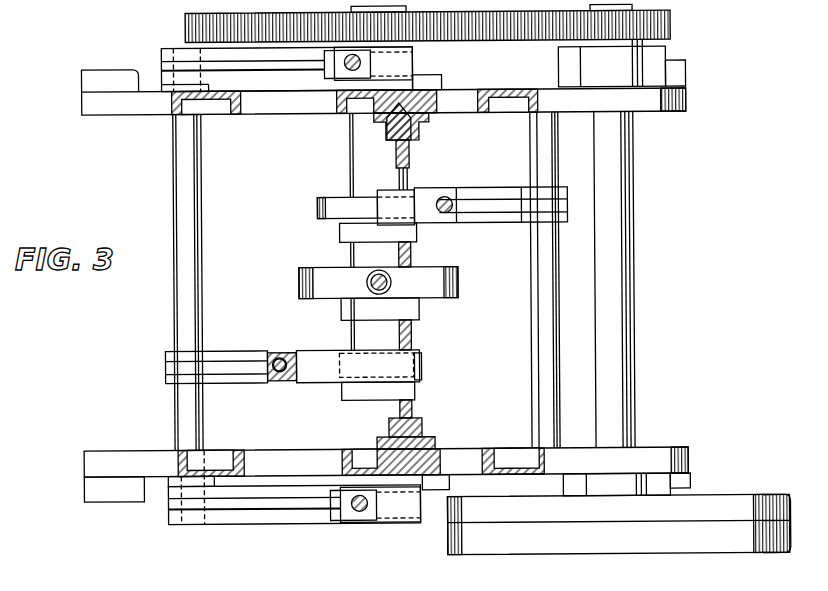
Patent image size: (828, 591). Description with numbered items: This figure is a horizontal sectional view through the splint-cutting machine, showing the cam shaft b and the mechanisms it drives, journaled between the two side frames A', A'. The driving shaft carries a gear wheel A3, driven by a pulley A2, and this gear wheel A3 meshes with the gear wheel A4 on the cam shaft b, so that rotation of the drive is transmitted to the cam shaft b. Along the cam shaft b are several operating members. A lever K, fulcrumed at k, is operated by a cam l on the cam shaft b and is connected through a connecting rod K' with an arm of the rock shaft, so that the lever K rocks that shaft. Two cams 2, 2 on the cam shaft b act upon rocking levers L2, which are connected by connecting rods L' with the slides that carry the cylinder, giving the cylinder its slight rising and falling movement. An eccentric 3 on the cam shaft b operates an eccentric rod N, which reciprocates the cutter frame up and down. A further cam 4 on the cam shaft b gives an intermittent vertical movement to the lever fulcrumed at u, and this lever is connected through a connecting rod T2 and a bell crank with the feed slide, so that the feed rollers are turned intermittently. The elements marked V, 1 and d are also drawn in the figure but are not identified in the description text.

The gear wheel A3 is at (672, 27).
The gear wheel A4 is at (489, 41).
The side frame A' is at (385, 282).
The pulley A2 is at (618, 524).
The connecting rod L' is at (322, 305).
The rocking lever L2 is at (290, 512).
The cam l is at (197, 524).
The fulcrum u is at (165, 384).
The connecting rod T2 is at (270, 383).
The slide bar V is at (312, 384).
The eccentric rod N is at (366, 287).
The eccentric 3 is at (428, 288).
The cam 4 is at (419, 385).
The arm 1 is at (318, 211).
The cam 2 is at (418, 62).
The lever K is at (472, 190).
The connecting rod K' is at (457, 224).
The fulcrum k is at (522, 188).
The cam shaft b is at (351, 171).
The guide rod d is at (613, 292).